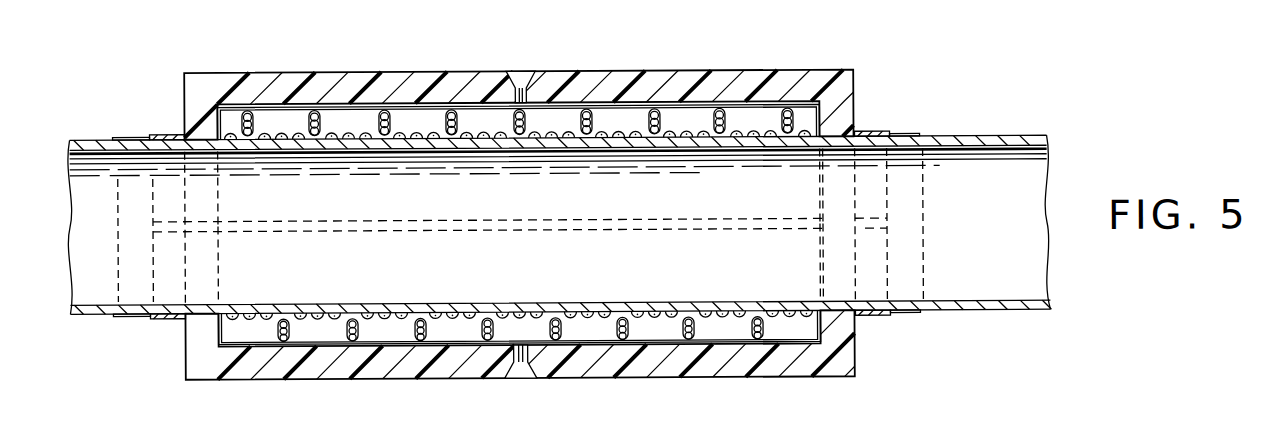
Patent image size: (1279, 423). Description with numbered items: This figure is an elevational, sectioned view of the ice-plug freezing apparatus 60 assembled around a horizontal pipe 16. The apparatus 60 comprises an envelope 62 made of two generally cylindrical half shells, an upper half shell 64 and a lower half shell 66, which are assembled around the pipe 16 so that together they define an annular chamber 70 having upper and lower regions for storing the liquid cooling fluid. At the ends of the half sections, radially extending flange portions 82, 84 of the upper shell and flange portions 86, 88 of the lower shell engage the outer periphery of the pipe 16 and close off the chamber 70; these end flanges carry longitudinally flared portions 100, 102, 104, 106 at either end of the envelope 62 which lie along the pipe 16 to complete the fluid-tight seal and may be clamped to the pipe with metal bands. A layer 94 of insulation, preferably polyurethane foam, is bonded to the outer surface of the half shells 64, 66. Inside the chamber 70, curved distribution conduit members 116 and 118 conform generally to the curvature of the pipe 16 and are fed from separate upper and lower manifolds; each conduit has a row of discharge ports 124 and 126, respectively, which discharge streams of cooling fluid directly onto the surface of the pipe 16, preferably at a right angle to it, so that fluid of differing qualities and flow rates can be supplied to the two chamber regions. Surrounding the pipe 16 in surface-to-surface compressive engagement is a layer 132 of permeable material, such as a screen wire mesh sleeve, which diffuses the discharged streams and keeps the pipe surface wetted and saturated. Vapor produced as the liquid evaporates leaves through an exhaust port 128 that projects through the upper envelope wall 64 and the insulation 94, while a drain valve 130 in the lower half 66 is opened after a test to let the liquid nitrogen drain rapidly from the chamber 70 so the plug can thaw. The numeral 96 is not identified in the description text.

The pipe 16 is at (96, 139).
The apparatus 60 is at (537, 218).
The envelope 62 is at (265, 98).
The upper half shell 64 is at (388, 108).
The lower half shell 66 is at (380, 340).
The annular chamber 70 is at (577, 223).
The radially extending flange portion 82 is at (224, 210).
The radially extending flange portion 84 is at (224, 292).
The radially extending flange portion 86 is at (818, 188).
The radially extending flange portion 88 is at (818, 255).
The layer of insulation 94 is at (703, 80).
The left sleeve 96 is at (132, 136).
The longitudinally flared portion 100 is at (158, 180).
The longitudinally flared portion 102 is at (157, 318).
The longitudinally flared portion 104 is at (926, 178).
The longitudinally flared portion 106 is at (886, 282).
The distribution conduit member 116 is at (786, 112).
The distribution conduit member 118 is at (562, 326).
The discharge port 124 is at (785, 135).
The discharge port 126 is at (560, 316).
The exhaust port 128 is at (522, 72).
The drain valve 130 is at (526, 378).
The layer of permeable material 132 is at (462, 137).